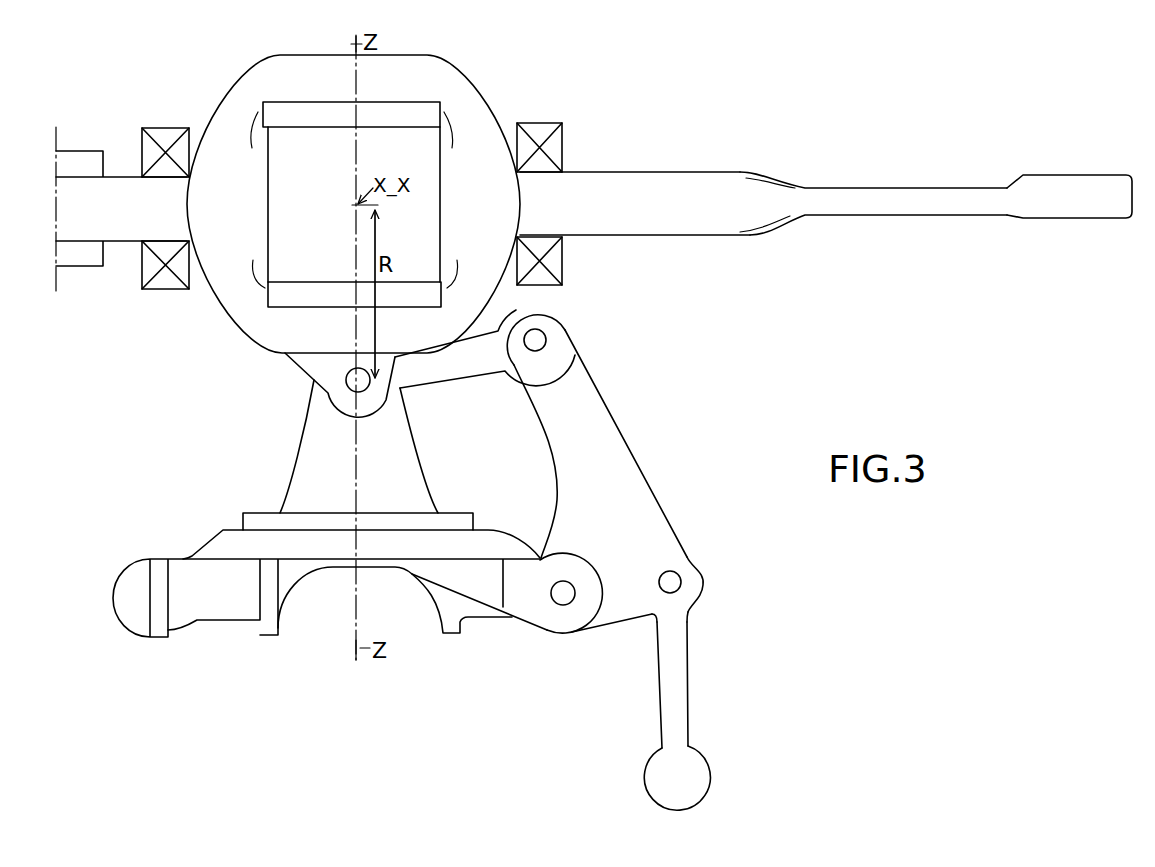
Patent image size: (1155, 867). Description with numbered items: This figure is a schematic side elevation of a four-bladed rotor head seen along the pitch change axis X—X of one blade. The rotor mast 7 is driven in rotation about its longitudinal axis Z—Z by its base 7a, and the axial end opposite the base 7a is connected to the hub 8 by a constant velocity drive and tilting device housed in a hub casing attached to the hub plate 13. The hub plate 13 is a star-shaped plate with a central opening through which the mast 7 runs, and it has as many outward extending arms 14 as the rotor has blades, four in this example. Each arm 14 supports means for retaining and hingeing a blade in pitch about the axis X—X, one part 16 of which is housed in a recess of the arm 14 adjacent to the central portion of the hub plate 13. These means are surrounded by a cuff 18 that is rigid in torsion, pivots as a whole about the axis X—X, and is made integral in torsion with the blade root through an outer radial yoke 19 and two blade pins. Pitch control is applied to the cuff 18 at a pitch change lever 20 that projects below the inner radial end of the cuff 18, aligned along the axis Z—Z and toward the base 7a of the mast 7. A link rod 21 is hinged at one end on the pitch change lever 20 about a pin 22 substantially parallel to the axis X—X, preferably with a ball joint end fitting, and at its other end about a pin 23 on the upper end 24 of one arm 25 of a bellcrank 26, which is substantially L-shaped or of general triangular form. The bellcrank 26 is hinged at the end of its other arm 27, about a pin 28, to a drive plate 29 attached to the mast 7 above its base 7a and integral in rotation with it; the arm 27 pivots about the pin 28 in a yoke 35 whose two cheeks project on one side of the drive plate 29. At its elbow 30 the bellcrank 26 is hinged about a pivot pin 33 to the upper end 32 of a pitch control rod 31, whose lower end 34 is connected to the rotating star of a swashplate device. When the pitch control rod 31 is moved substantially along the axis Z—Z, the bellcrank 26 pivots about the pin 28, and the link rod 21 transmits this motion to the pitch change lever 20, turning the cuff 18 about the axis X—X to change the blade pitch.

The rotor mast 7 is at (323, 433).
The base of the rotor mast 7a is at (455, 625).
The hub 8 is at (588, 167).
The hub plate 13 is at (673, 195).
The arm of the hub plate 14 is at (837, 197).
The part of the means for retaining and hingeing the blade 16 is at (170, 135).
The cuff 18 is at (485, 100).
The outer radial yoke 19 is at (287, 113).
The pitch change lever 20 is at (335, 388).
The link rod 21 is at (463, 362).
The pin 22 is at (350, 378).
The pin 23 is at (545, 336).
The upper end of the bellcrank arm 24 is at (557, 352).
The arm of the bellcrank 25 is at (597, 445).
The bellcrank 26 is at (672, 519).
The other arm of the bellcrank 27 is at (620, 600).
The pin 28 is at (558, 598).
The drive plate 29 is at (213, 552).
The elbow of the bellcrank 30 is at (684, 574).
The pitch control rod 31 is at (675, 663).
The upper end of the pitch control rod 32 is at (677, 615).
The pivot pin 33 is at (672, 582).
The lower end of the pitch control rod 34 is at (668, 765).
The yoke 35 is at (562, 567).